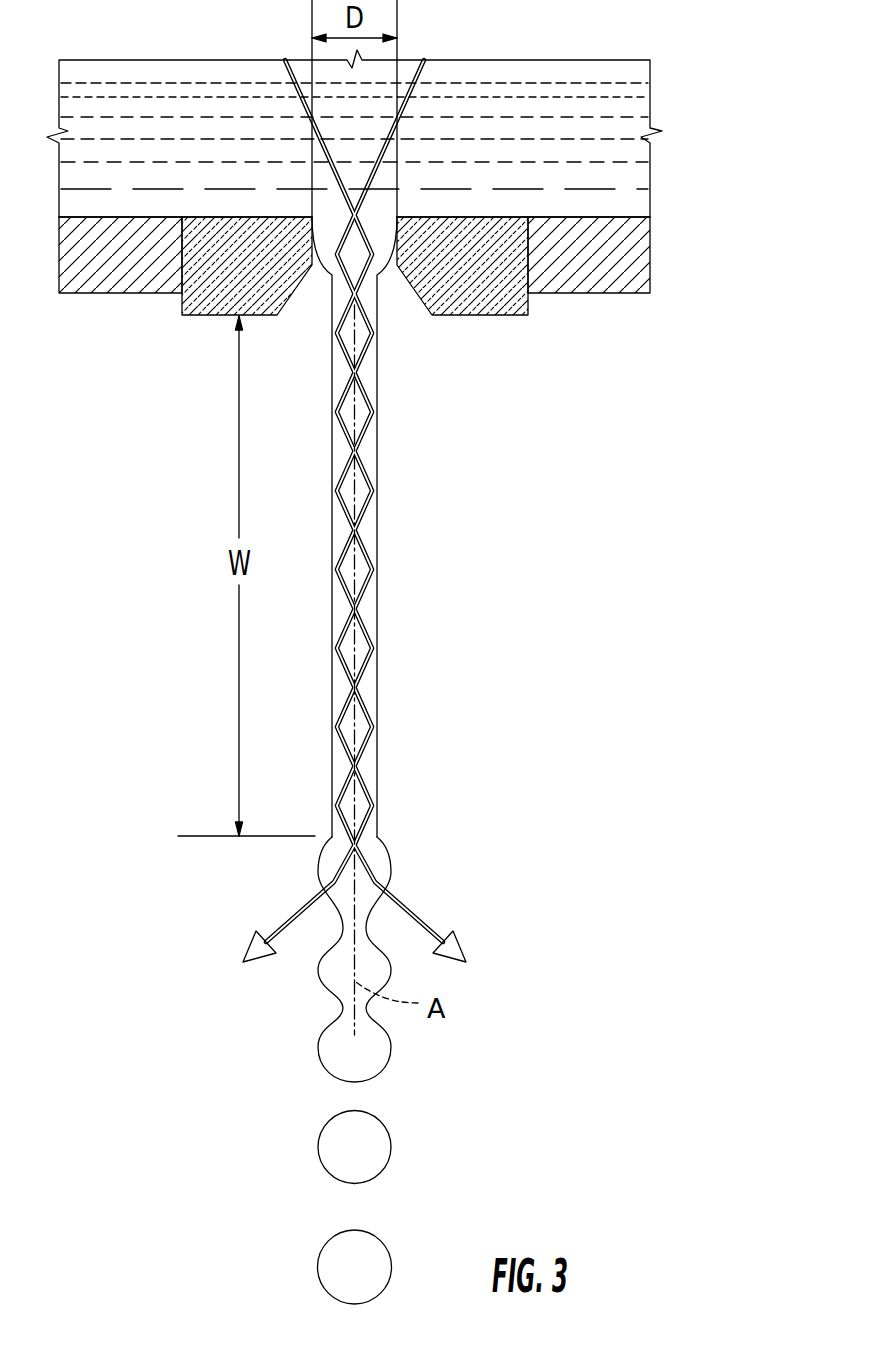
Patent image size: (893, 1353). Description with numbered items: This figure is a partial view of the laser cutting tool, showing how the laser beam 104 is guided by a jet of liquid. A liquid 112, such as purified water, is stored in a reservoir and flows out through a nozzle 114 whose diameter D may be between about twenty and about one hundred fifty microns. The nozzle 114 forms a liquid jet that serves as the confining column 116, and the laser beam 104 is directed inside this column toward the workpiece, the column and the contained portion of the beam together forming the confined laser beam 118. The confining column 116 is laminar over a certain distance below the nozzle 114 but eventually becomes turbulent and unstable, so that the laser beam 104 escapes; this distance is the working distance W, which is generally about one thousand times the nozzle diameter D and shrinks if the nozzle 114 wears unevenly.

The laser beam 104 is at (368, 582).
The liquid 112 is at (653, 57).
The nozzle 114 is at (531, 303).
The confining column 116 is at (377, 450).
The confined laser beam 118 is at (483, 720).